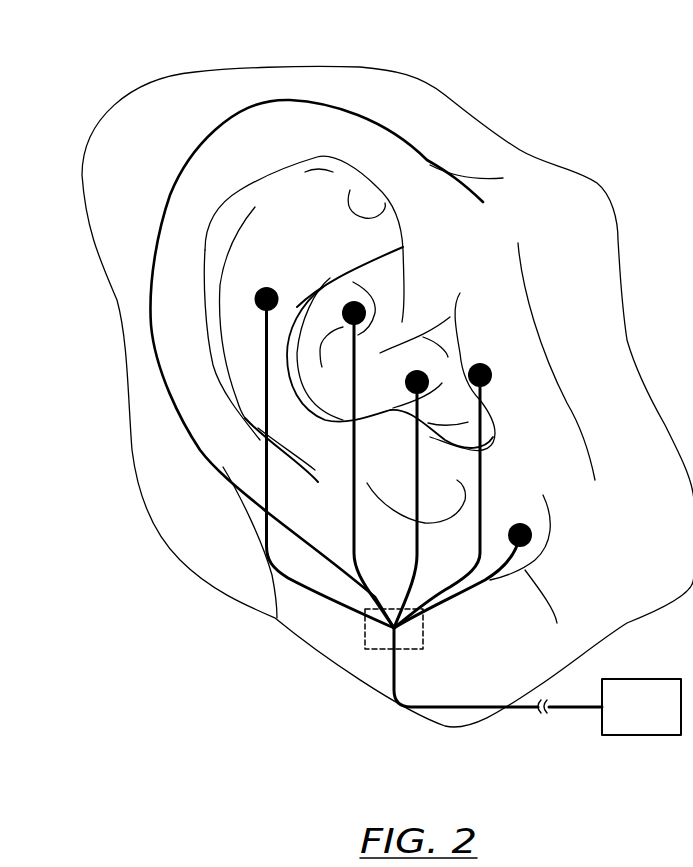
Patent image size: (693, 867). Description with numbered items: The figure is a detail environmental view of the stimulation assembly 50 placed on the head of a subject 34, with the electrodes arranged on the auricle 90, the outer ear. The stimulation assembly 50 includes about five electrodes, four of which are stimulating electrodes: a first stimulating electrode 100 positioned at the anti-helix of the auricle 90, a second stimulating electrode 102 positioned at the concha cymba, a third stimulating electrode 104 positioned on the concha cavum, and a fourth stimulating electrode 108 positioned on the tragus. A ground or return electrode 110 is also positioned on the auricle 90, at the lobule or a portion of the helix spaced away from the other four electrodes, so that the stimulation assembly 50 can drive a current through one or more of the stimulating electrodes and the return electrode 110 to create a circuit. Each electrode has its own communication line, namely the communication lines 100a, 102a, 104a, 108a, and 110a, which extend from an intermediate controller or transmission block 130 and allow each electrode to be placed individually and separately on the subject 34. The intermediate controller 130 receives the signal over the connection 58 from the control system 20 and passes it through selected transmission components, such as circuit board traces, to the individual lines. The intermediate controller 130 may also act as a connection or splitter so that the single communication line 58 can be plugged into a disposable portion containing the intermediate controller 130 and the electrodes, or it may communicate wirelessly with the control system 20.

The control system 20 is at (654, 727).
The subject 34 is at (295, 58).
The stimulation assembly 50 is at (263, 678).
The connection 58 is at (472, 707).
The auricle 90 is at (248, 95).
The first stimulating electrode 100 is at (266, 287).
The communication line 100a is at (266, 350).
The second stimulating electrode 102 is at (354, 301).
The communication line 102a is at (354, 476).
The third stimulating electrode 104 is at (417, 369).
The communication line 104a is at (417, 470).
The fourth stimulating electrode 108 is at (482, 363).
The communication line 108a is at (520, 380).
The ground or return electrode 110 is at (516, 522).
The communication line 110a is at (455, 598).
The intermediate controller 130 is at (383, 649).